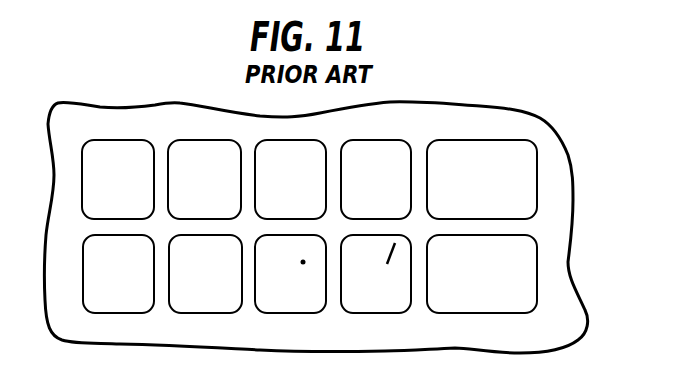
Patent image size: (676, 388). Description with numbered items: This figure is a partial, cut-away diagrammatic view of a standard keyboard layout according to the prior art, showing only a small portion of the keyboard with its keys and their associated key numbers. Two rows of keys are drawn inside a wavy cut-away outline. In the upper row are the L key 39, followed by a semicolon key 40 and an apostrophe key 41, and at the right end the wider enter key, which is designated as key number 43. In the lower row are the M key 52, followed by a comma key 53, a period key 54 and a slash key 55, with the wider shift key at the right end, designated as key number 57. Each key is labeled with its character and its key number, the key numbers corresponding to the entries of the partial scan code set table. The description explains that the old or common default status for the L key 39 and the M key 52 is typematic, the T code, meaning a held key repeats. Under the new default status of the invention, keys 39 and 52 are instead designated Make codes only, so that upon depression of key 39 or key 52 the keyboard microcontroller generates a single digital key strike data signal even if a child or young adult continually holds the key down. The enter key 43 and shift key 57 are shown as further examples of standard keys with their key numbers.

The L key 39 is at (222, 208).
The semicolon key 40 is at (308, 208).
The apostrophe key 41 is at (395, 208).
The enter key 43 is at (498, 208).
The M key 52 is at (135, 301).
The comma key 53 is at (223, 301).
The period key 54 is at (308, 301).
The slash key 55 is at (395, 301).
The shift key 57 is at (497, 301).